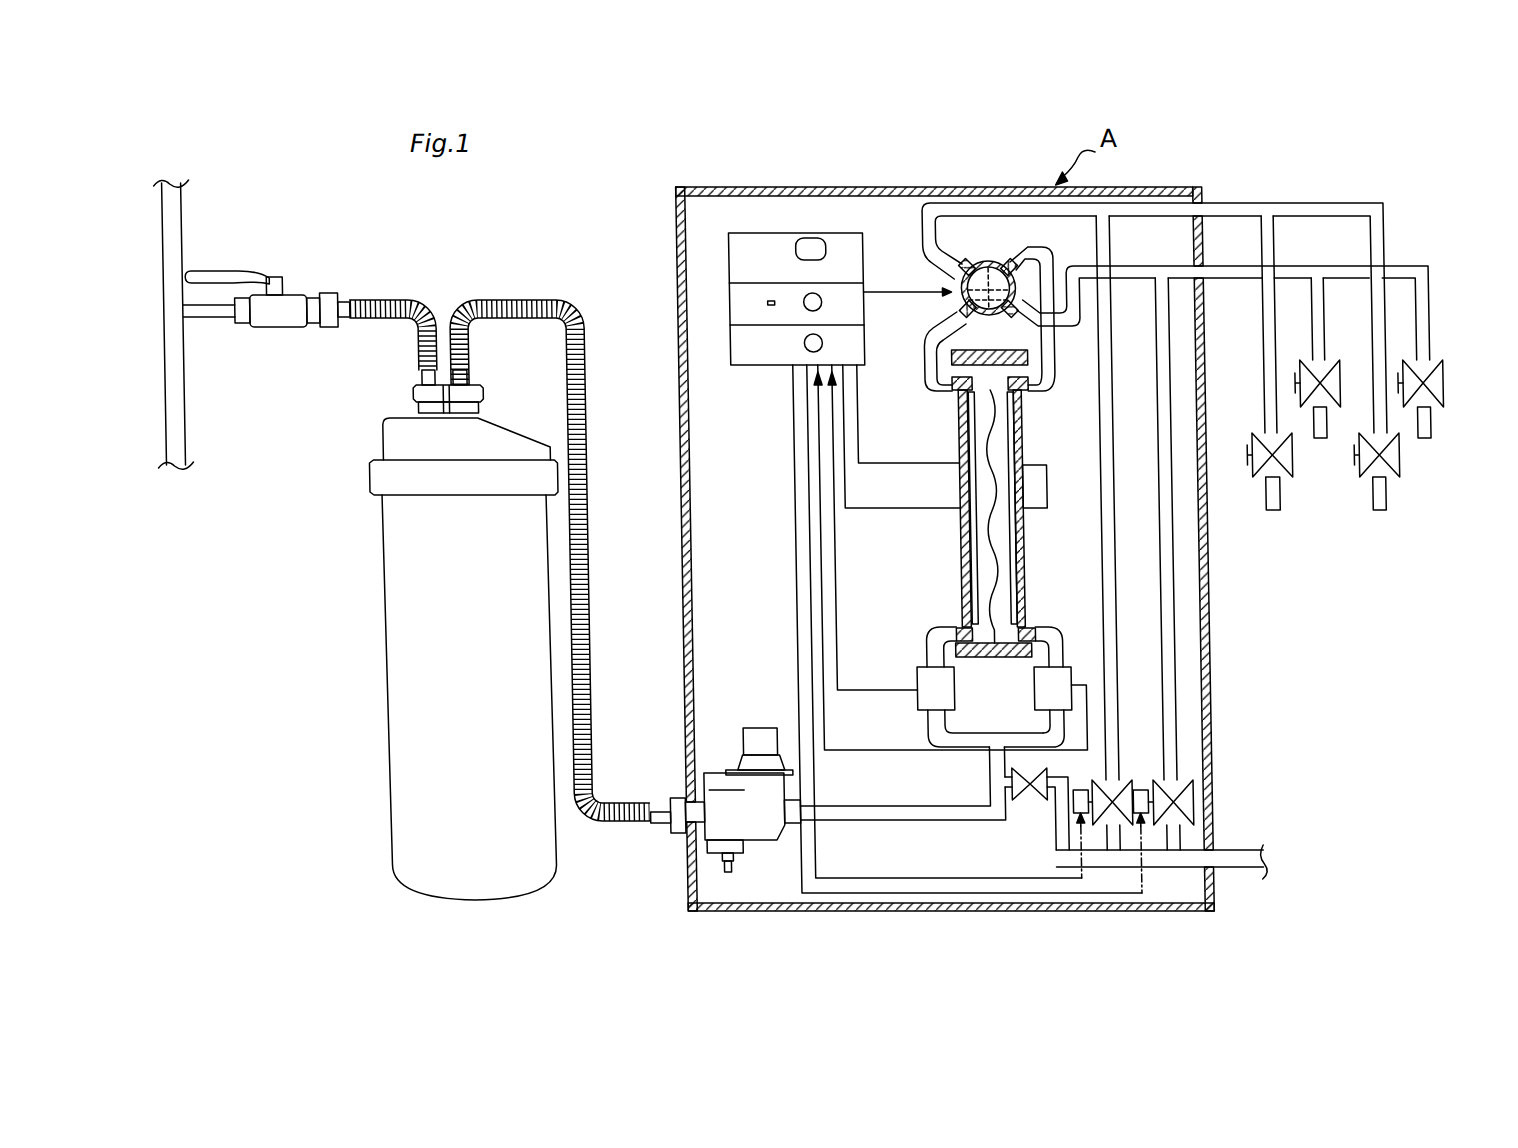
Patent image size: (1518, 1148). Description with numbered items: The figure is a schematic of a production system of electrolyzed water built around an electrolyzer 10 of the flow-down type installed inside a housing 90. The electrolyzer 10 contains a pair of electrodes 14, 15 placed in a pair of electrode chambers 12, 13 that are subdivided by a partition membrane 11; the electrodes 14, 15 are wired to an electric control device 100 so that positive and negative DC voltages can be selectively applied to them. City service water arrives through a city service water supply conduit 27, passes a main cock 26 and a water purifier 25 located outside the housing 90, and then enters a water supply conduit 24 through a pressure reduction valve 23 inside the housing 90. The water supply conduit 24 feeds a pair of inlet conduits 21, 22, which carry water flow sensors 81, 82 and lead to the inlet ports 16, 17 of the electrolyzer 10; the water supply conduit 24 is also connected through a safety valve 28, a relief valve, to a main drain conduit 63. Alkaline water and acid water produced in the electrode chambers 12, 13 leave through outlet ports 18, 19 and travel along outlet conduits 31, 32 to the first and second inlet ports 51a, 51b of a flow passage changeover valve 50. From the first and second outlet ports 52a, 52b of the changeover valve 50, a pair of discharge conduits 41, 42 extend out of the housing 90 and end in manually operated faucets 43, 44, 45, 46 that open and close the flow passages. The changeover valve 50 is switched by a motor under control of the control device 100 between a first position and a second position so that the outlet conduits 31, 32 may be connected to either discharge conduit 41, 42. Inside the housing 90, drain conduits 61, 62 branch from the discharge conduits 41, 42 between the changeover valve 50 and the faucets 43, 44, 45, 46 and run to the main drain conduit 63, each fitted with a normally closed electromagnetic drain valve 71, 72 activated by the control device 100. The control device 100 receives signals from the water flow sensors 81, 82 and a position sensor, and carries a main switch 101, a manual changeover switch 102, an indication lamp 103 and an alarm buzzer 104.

The electrolyzer 10 is at (958, 528).
The partition membrane 11 is at (990, 430).
The electrode chamber 12 is at (984, 555).
The electrode chamber 13 is at (1010, 556).
The electrode 14 is at (971, 489).
The electrode 15 is at (1048, 492).
The inlet port 16 is at (957, 630).
The inlet port 17 is at (1031, 622).
The outlet port 18 is at (963, 391).
The outlet port 19 is at (1022, 394).
The inlet conduit 21 is at (927, 647).
The inlet conduit 22 is at (1063, 648).
The pressure reduction valve 23 is at (762, 828).
The water supply conduit 24 is at (906, 808).
The water purifier 25 is at (400, 600).
The main cock 26 is at (282, 276).
The city service water supply conduit 27 is at (176, 228).
The safety valve 28 is at (1034, 798).
The outlet conduit 31 is at (931, 374).
The outlet conduit 32 is at (1058, 368).
The discharge conduit 41 is at (1228, 207).
The discharge conduit 42 is at (1226, 276).
The faucet 43 is at (1285, 460).
The faucet 44 is at (1392, 460).
The faucet 45 is at (1328, 378).
The faucet 46 is at (1431, 378).
The flow passage changeover valve 50 is at (977, 256).
The first inlet port 51a is at (1045, 336).
The second inlet port 51b is at (1023, 256).
The first outlet port 52a is at (960, 261).
The second outlet port 52b is at (1030, 316).
The drain conduit 61 is at (1115, 588).
The drain conduit 62 is at (1160, 672).
The main drain conduit 63 is at (1160, 857).
The drain valve 71 is at (1103, 781).
The drain valve 72 is at (1179, 781).
The water flow sensor 81 is at (928, 700).
The water flow sensor 82 is at (1046, 700).
The housing 90 is at (897, 188).
The electric control device 100 is at (773, 234).
The main switch 101 is at (831, 250).
The manual changeover switch 102 is at (826, 302).
The indication lamp 103 is at (770, 303).
The alarm buzzer 104 is at (826, 343).